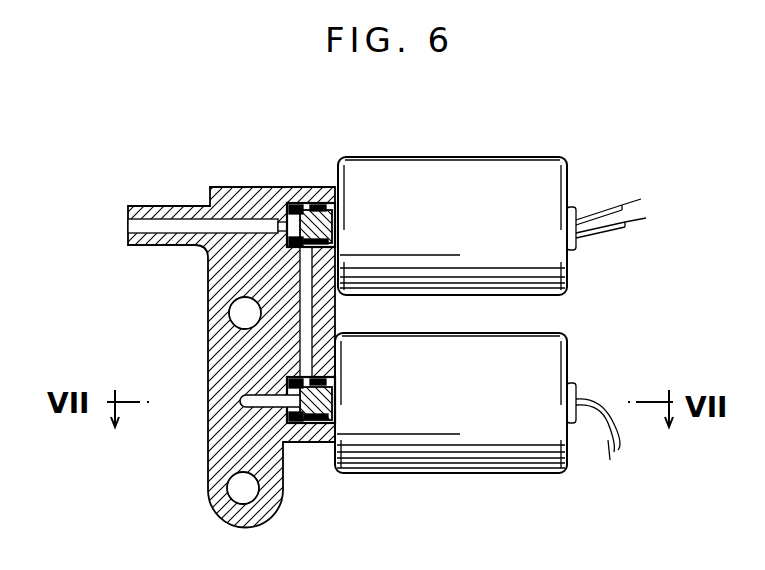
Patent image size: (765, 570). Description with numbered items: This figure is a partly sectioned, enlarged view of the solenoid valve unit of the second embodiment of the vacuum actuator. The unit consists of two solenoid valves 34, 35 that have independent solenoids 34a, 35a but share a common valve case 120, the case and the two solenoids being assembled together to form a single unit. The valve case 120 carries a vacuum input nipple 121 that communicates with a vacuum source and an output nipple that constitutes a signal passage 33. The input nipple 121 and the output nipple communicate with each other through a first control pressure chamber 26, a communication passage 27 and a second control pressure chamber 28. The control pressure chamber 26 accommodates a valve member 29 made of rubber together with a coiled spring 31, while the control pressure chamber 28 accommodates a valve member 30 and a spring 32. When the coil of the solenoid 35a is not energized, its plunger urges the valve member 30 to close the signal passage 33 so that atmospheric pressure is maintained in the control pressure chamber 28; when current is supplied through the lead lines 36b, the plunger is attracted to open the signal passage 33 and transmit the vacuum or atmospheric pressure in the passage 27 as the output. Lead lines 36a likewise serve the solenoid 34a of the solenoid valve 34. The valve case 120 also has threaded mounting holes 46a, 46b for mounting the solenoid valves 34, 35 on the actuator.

The valve case 120 is at (208, 358).
The vacuum input nipple 121 is at (148, 206).
The threaded mounting hole 46a is at (229, 318).
The threaded mounting hole 46b is at (233, 495).
The control pressure chamber 26 is at (297, 207).
The coiled spring 31 is at (306, 207).
The valve member 29 is at (326, 210).
The communication passage 27 is at (303, 312).
The control pressure chamber 28 is at (300, 443).
The spring 32 is at (317, 443).
The valve member 30 is at (320, 440).
The signal passage 33 is at (240, 410).
The solenoid valve 34 is at (475, 137).
The solenoid 34a is at (524, 173).
The lead lines 36a is at (615, 206).
The solenoid valve 35 is at (633, 339).
The solenoid 35a is at (515, 472).
The lead lines 36b is at (622, 438).